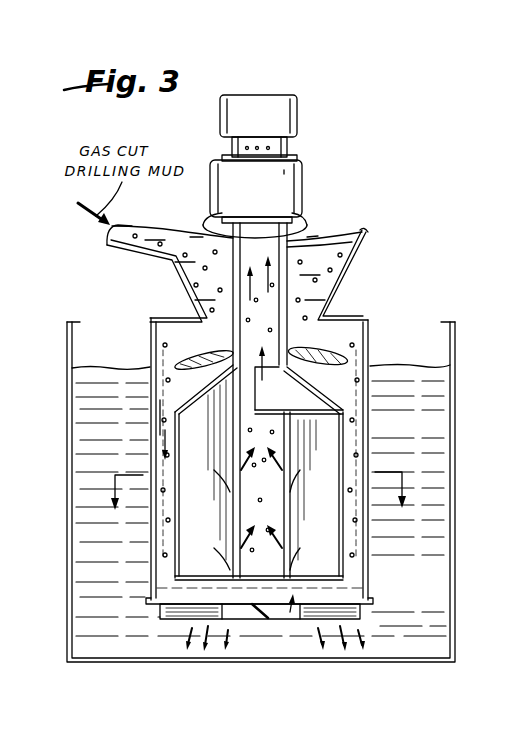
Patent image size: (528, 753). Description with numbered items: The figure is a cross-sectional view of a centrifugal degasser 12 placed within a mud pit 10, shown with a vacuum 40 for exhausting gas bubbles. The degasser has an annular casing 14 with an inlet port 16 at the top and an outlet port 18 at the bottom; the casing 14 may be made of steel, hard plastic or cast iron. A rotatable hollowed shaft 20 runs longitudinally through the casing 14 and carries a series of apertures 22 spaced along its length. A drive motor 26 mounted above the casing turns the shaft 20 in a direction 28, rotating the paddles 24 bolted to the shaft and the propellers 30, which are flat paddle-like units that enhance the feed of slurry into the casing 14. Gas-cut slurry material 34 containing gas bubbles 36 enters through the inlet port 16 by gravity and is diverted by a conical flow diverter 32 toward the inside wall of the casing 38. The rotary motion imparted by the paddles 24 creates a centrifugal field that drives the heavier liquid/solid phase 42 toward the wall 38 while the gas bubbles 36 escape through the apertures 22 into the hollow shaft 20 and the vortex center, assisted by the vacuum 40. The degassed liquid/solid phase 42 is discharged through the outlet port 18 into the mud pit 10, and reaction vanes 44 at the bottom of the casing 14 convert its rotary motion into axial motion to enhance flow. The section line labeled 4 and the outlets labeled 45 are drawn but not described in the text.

The section line 4- 4 is at (257, 504).
The mud pit 10 is at (455, 340).
The centrifugal degasser 12 is at (380, 270).
The casing 14 is at (370, 340).
The inlet port 16 is at (348, 226).
The outlet port 18 is at (372, 592).
The rotatable hollowed shaft 20 is at (364, 238).
The apertures 22 is at (233, 470).
The paddles 24 is at (195, 439).
The drive motor 26 is at (303, 180).
The direction 28 is at (310, 226).
The propellers 30 is at (125, 388).
The conical flow diverter 32 is at (260, 400).
The slurry material 34 is at (148, 236).
The gas bubbles 36 is at (210, 298).
The inside wall of the casing 38 is at (154, 338).
The vacuum 40 is at (297, 110).
The liquid/solid phase 42 is at (103, 394).
The reaction vanes 44 is at (346, 588).
The discharge outlets 45 is at (260, 614).